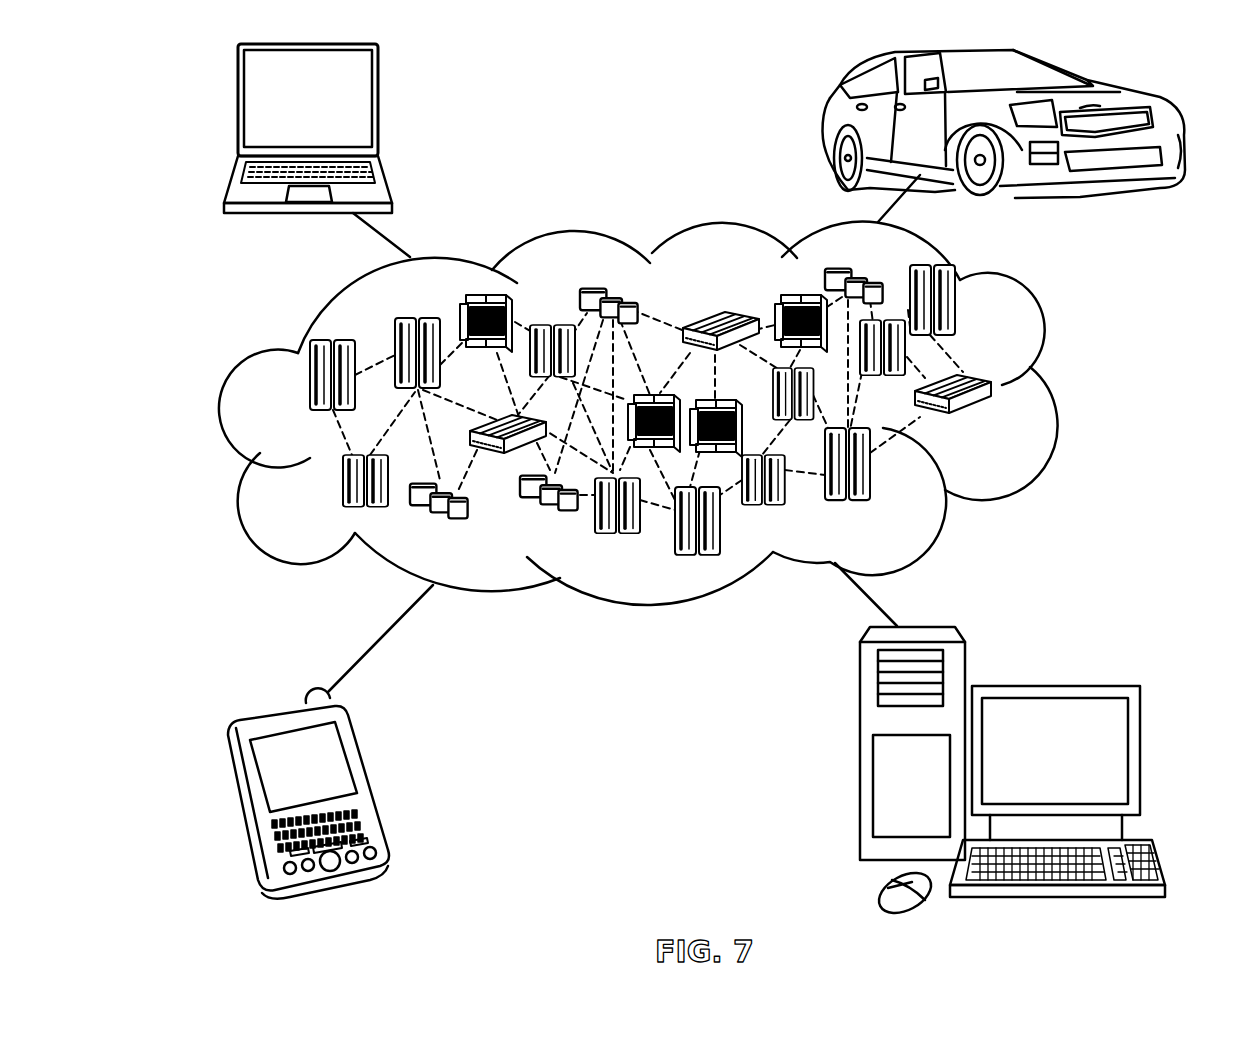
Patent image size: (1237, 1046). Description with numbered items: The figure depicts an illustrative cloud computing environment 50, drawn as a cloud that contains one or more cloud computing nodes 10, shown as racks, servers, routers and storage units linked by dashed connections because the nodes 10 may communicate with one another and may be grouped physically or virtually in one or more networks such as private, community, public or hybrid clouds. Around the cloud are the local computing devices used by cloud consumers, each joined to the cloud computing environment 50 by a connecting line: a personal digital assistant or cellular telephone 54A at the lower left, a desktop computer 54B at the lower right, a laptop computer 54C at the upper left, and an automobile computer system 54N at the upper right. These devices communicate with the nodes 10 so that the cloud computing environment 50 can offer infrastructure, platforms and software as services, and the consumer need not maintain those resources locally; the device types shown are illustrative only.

The cloud computing node 10 is at (1000, 420).
The cloud computing environment 50 is at (667, 413).
The personal digital assistant or cellular telephone 54A is at (372, 782).
The desktop computer 54B is at (1052, 686).
The laptop computer 54C is at (380, 107).
The automobile computer system 54N is at (829, 123).